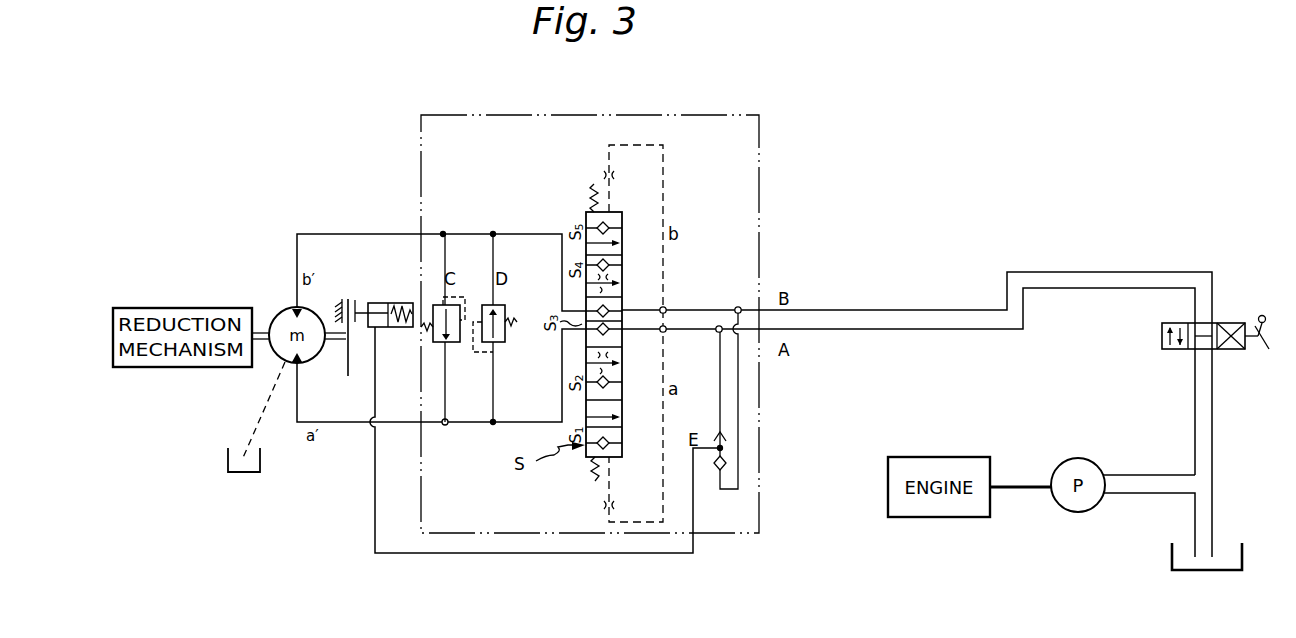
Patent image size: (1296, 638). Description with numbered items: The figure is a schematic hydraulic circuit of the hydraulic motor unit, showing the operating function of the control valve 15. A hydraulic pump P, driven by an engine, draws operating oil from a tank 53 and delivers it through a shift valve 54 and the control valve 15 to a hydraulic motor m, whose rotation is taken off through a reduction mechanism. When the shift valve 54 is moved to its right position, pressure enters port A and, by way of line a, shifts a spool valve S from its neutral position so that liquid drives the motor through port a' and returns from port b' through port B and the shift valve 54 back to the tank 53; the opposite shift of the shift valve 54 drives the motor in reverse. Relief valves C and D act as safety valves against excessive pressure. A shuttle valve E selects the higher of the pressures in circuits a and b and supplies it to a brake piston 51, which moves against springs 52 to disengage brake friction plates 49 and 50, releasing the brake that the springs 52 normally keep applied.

The control valve 15 is at (719, 114).
The brake friction plate 49 is at (355, 302).
The brake friction plate 50 is at (347, 358).
The brake piston 51 is at (383, 328).
The springs 52 is at (397, 302).
The tank 53 is at (1219, 572).
The shift valve 54 is at (1272, 328).